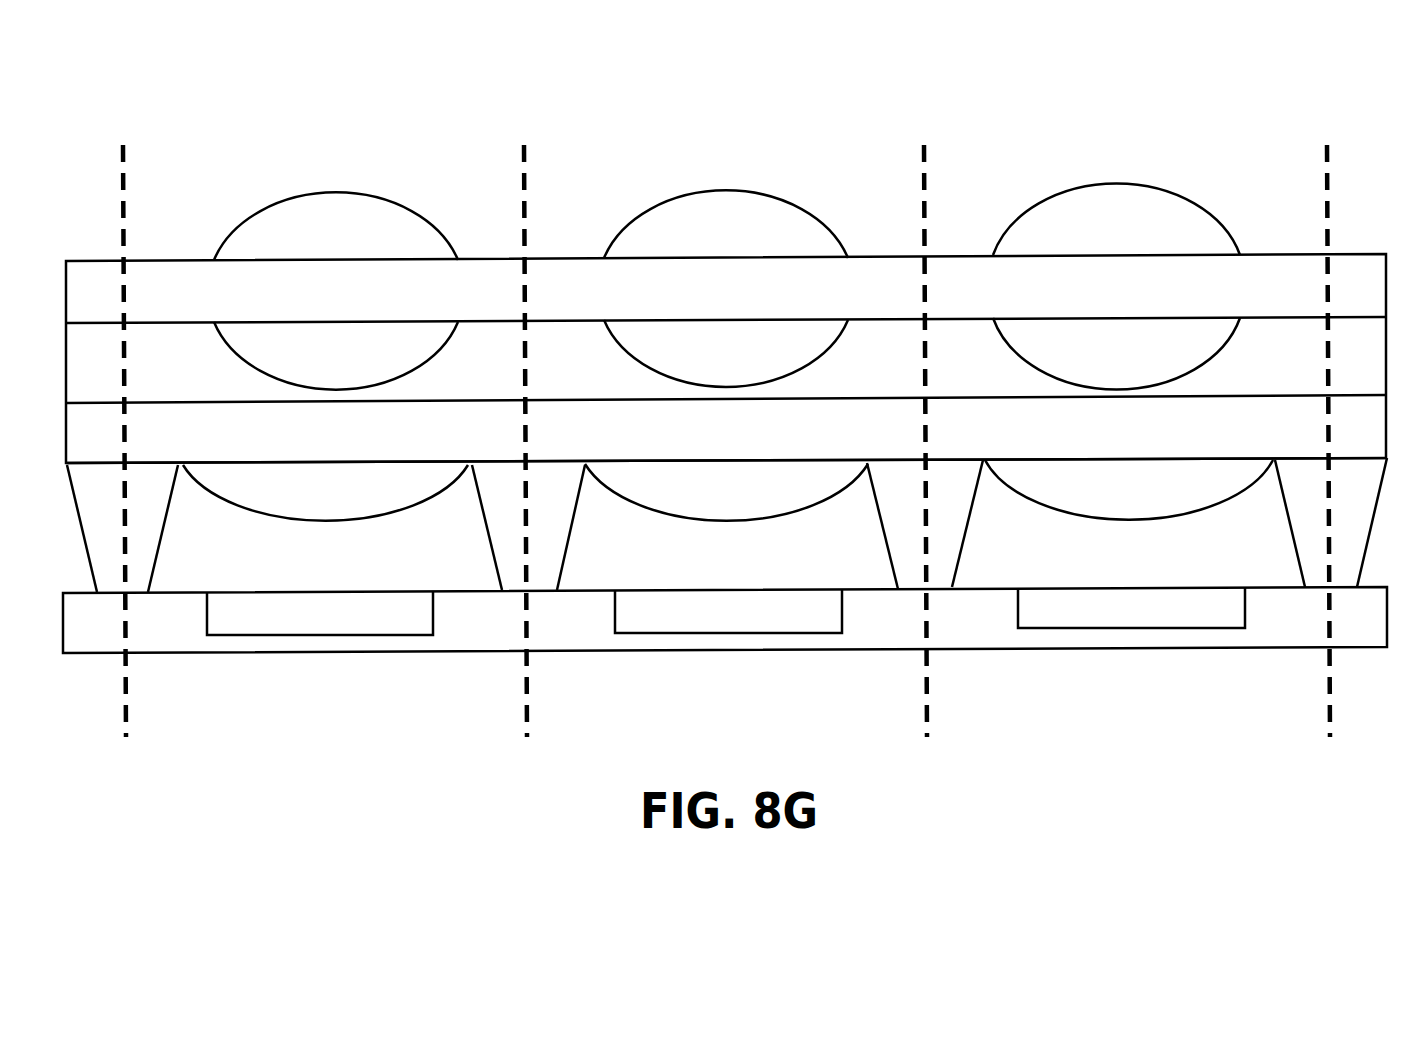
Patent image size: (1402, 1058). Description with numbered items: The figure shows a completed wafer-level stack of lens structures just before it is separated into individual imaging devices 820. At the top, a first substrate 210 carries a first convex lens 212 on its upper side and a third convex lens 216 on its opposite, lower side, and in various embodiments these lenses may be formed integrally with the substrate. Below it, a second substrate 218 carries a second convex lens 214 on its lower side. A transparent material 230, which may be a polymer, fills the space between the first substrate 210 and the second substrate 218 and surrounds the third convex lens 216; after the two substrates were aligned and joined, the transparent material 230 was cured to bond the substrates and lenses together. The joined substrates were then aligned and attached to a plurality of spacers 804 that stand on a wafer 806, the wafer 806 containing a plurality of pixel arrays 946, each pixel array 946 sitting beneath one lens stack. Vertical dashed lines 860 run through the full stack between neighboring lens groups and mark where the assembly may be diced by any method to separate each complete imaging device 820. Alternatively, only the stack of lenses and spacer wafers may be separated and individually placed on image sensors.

The first substrate 210 is at (372, 313).
The first convex lens 212 is at (372, 250).
The second convex lens 214 is at (364, 512).
The third convex lens 216 is at (372, 373).
The second substrate 218 is at (364, 455).
The transparent material 230 is at (519, 395).
The spacers 804 is at (569, 520).
The wafer 806 is at (967, 640).
The imaging device 820 is at (725, 388).
The dashed lines 860 is at (925, 160).
The pixel arrays 946 is at (1205, 615).